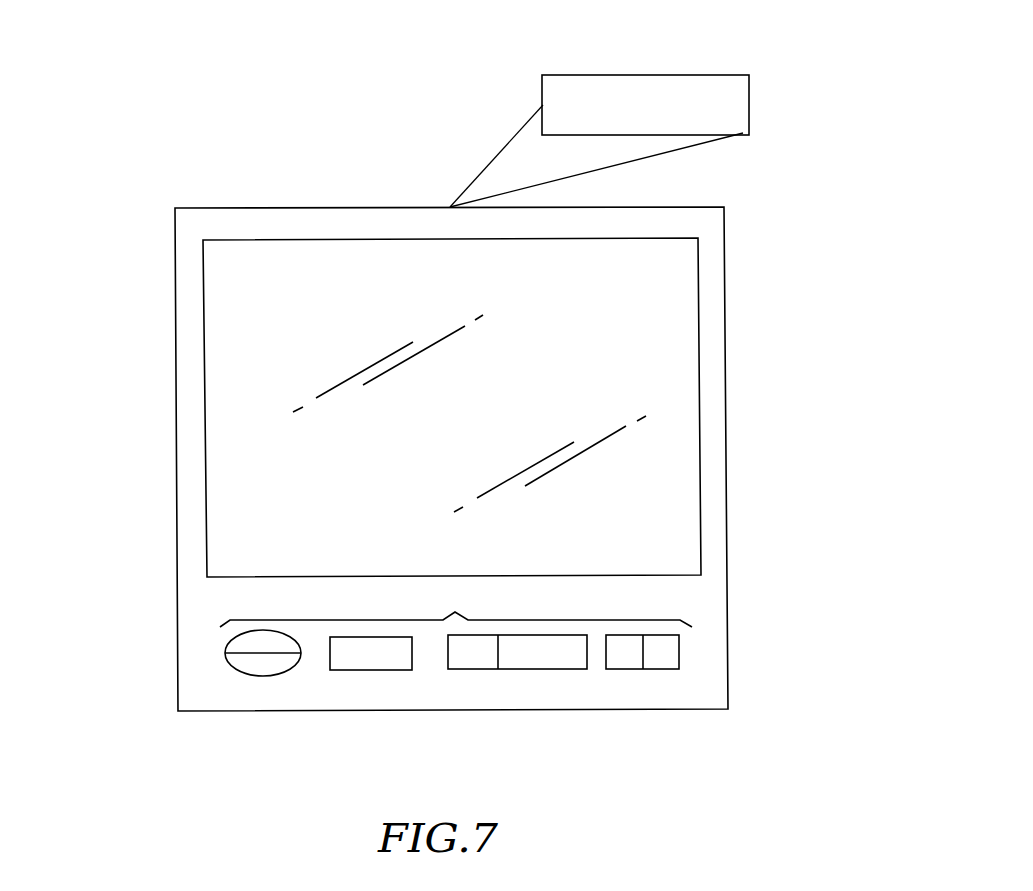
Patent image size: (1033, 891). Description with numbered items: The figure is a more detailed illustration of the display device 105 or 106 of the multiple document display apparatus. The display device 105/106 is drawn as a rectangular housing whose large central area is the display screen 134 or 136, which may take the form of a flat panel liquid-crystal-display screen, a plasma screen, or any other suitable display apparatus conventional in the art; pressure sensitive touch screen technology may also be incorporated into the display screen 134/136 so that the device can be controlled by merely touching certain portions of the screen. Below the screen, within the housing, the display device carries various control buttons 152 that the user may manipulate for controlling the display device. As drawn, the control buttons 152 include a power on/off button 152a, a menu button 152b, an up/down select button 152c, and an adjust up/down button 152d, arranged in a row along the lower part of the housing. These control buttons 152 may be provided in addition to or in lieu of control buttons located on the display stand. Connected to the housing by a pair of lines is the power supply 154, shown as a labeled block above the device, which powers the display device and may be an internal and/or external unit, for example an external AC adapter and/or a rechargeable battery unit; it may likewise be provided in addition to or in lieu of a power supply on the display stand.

The power supply 154 is at (723, 74).
The display device 105 is at (523, 459).
The display device 106 is at (726, 250).
The display screen 134 is at (372, 407).
The display screen 136 is at (223, 453).
The control buttons 152 is at (413, 674).
The power on/off button 152a is at (258, 677).
The menu button 152b is at (363, 671).
The up/down select button 152c is at (505, 670).
The adjust up/down button 152d is at (629, 670).